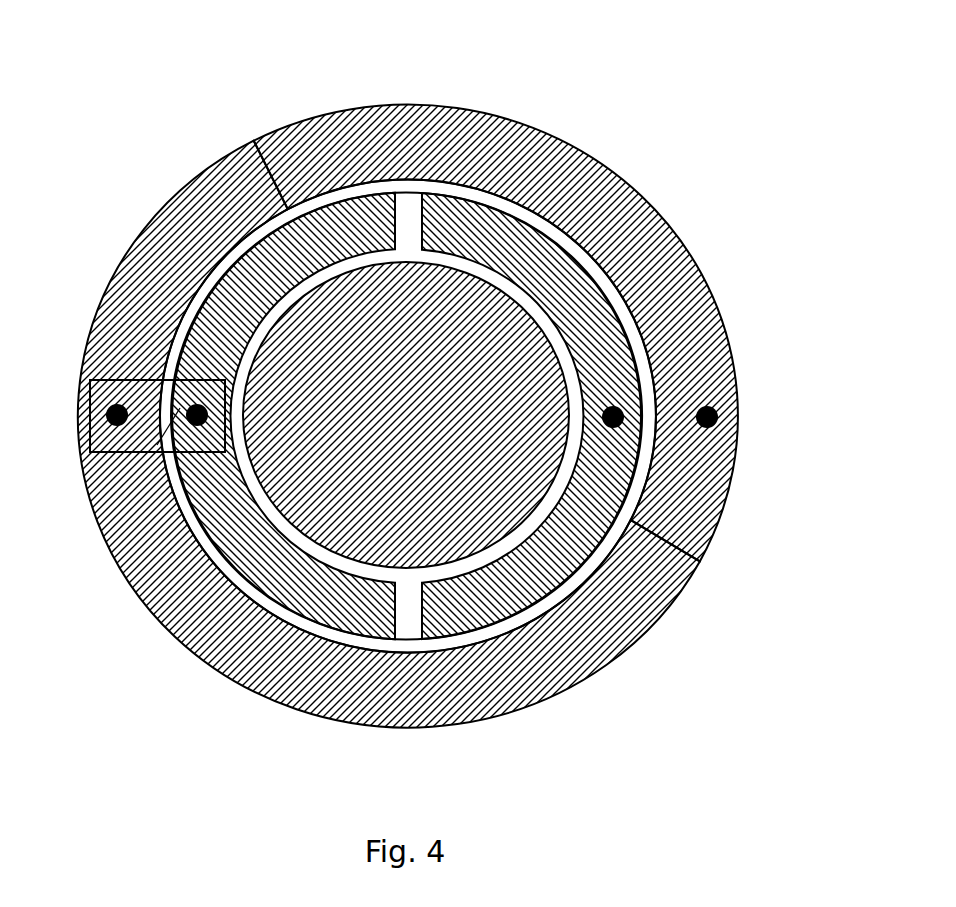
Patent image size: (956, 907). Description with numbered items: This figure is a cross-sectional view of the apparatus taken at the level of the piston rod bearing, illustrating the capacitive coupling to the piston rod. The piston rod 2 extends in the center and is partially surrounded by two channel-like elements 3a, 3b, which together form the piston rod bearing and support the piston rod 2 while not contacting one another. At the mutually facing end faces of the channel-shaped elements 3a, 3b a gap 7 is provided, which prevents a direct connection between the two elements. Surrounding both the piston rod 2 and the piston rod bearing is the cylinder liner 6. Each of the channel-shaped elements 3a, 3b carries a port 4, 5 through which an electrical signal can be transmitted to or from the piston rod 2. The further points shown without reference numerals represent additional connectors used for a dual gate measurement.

The piston rod 2 is at (505, 350).
The channel-like element 3a is at (252, 148).
The channel-like element 3b is at (620, 515).
The port 4 is at (97, 517).
The port 5 is at (643, 390).
The cylinder liner 6 is at (628, 300).
The gap 7 is at (412, 213).